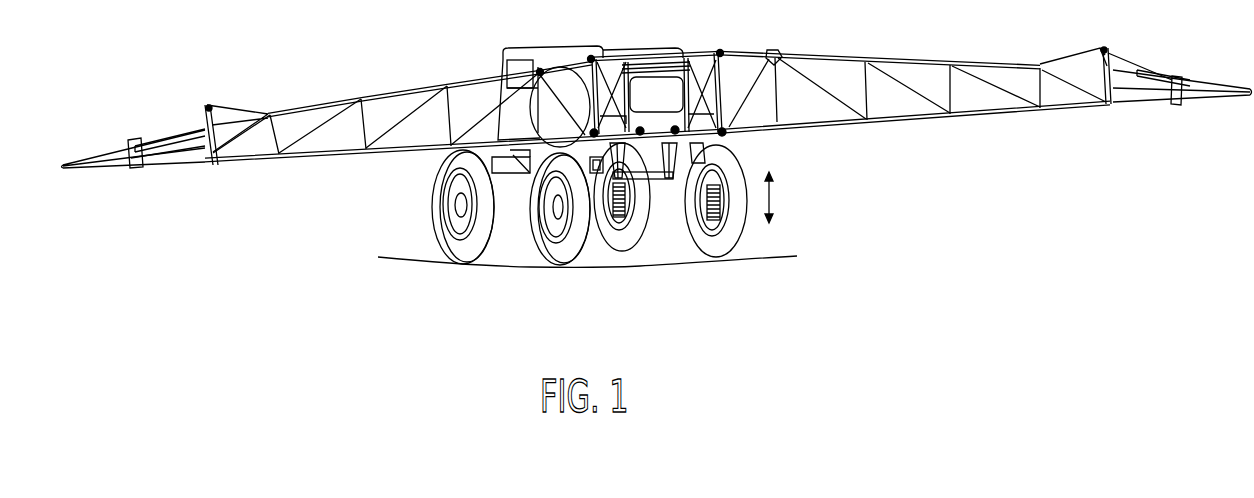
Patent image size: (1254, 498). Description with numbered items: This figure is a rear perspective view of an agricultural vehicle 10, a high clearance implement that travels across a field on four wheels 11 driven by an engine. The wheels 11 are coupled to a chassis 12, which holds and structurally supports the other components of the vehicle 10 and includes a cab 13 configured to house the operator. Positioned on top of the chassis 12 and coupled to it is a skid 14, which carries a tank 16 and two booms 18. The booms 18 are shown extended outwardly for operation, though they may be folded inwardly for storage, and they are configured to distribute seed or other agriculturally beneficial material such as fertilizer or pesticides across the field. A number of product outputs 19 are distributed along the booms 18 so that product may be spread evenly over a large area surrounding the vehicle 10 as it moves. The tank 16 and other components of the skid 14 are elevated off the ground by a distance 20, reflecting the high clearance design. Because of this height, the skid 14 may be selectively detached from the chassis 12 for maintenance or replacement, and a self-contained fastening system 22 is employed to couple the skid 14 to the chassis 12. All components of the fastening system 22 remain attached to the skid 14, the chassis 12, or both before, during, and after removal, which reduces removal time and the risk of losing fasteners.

The agricultural vehicle 10 is at (470, 37).
The wheels 11 is at (442, 218).
The chassis 12 is at (512, 174).
The cab 13 is at (517, 72).
The skid 14 is at (637, 40).
The tank 16 is at (568, 82).
The booms 18 is at (307, 156).
The product outputs 19 is at (173, 160).
The distance 20 is at (777, 198).
The self-contained fastening system 22 is at (593, 182).